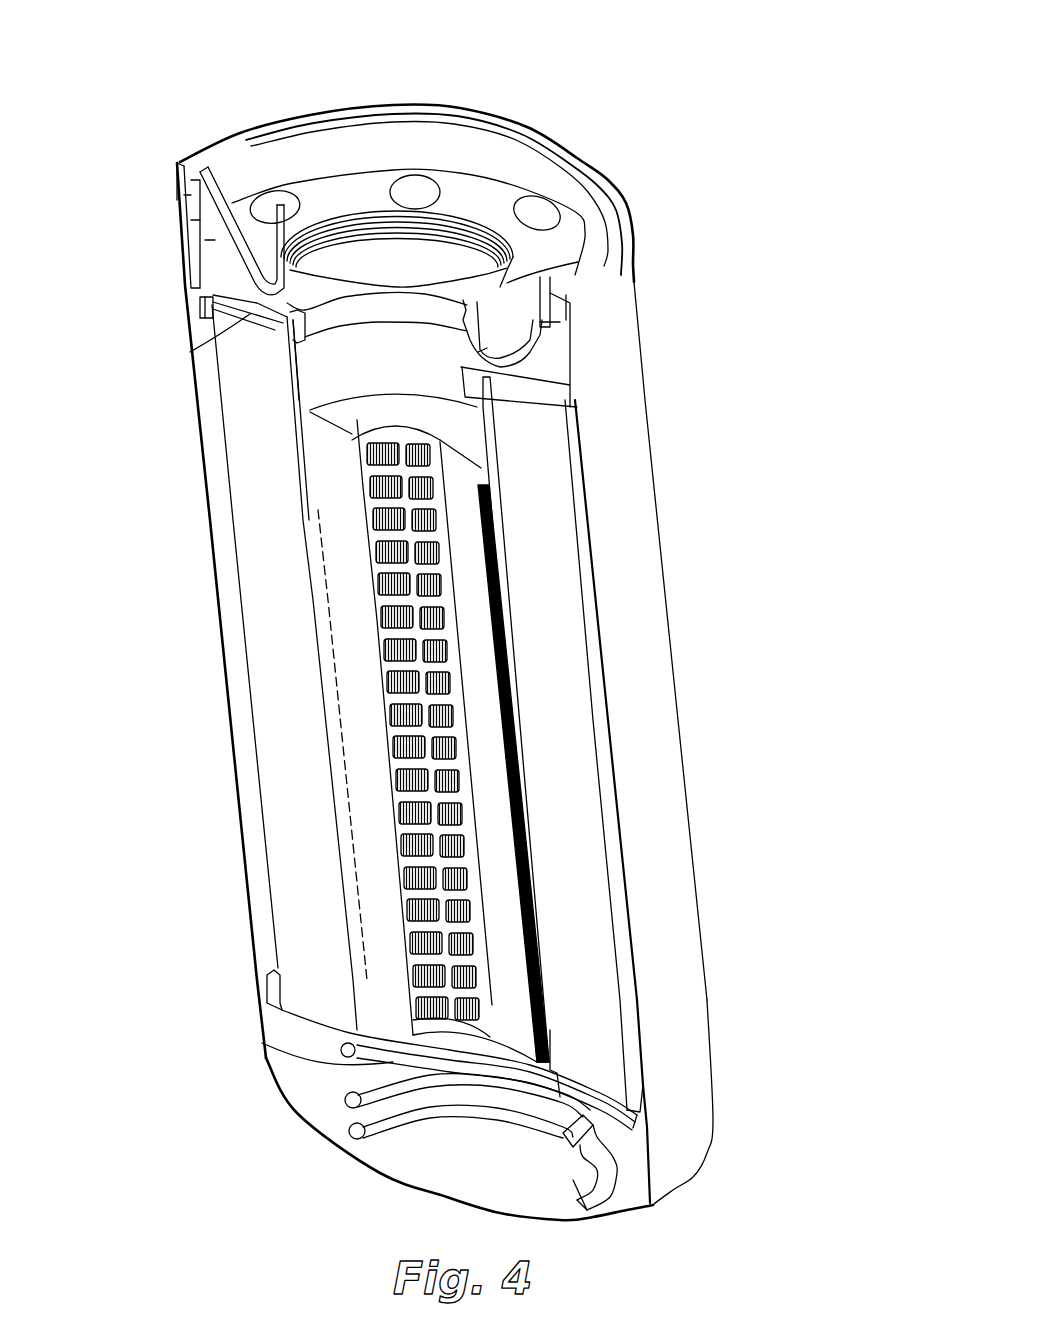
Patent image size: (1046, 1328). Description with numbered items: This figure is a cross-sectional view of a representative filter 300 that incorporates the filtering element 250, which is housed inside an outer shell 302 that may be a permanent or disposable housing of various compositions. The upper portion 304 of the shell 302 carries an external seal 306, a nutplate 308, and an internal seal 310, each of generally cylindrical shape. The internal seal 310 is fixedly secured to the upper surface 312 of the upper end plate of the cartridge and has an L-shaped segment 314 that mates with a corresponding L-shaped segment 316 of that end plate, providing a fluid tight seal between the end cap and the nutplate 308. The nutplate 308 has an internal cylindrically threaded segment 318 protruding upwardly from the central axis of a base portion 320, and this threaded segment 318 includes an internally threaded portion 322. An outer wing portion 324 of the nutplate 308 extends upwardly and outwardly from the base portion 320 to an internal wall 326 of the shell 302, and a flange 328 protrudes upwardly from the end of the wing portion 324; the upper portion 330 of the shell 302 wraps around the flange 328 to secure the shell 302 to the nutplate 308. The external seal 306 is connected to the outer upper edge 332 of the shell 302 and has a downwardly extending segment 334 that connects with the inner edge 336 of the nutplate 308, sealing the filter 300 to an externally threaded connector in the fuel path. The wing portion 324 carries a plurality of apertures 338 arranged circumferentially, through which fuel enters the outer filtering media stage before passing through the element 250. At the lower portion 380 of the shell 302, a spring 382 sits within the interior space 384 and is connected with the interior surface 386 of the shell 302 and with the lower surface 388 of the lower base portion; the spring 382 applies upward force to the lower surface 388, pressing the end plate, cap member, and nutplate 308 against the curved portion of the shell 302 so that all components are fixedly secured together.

The filter 300 is at (648, 46).
The shell 302 is at (646, 856).
The upper portion 304 is at (628, 258).
The external seal 306 is at (588, 159).
The nutplate 308 is at (243, 222).
The internal seal 310 is at (528, 378).
The upper surface 312 is at (212, 274).
The L-shaped segment 314 is at (262, 328).
The L-shaped segment 316 is at (256, 306).
The threaded segment 318 is at (498, 303).
The base portion 320 is at (484, 336).
The internally threaded portion 322 is at (478, 172).
The outer wing portion 324 is at (372, 186).
The internal wall 326 is at (216, 240).
The flange 328 is at (185, 205).
The upper portion 330 is at (178, 182).
The outer upper edge 332 is at (183, 172).
The downwardly extending segment 334 is at (255, 187).
The inner edge 336 is at (202, 218).
The apertures 338 is at (283, 200).
The filtering element 250 is at (478, 772).
The lower portion 380 is at (684, 1084).
The spring 382 is at (614, 1154).
The interior space 384 is at (440, 1132).
The interior surface 386 is at (592, 1210).
The lower surface 388 is at (341, 1047).